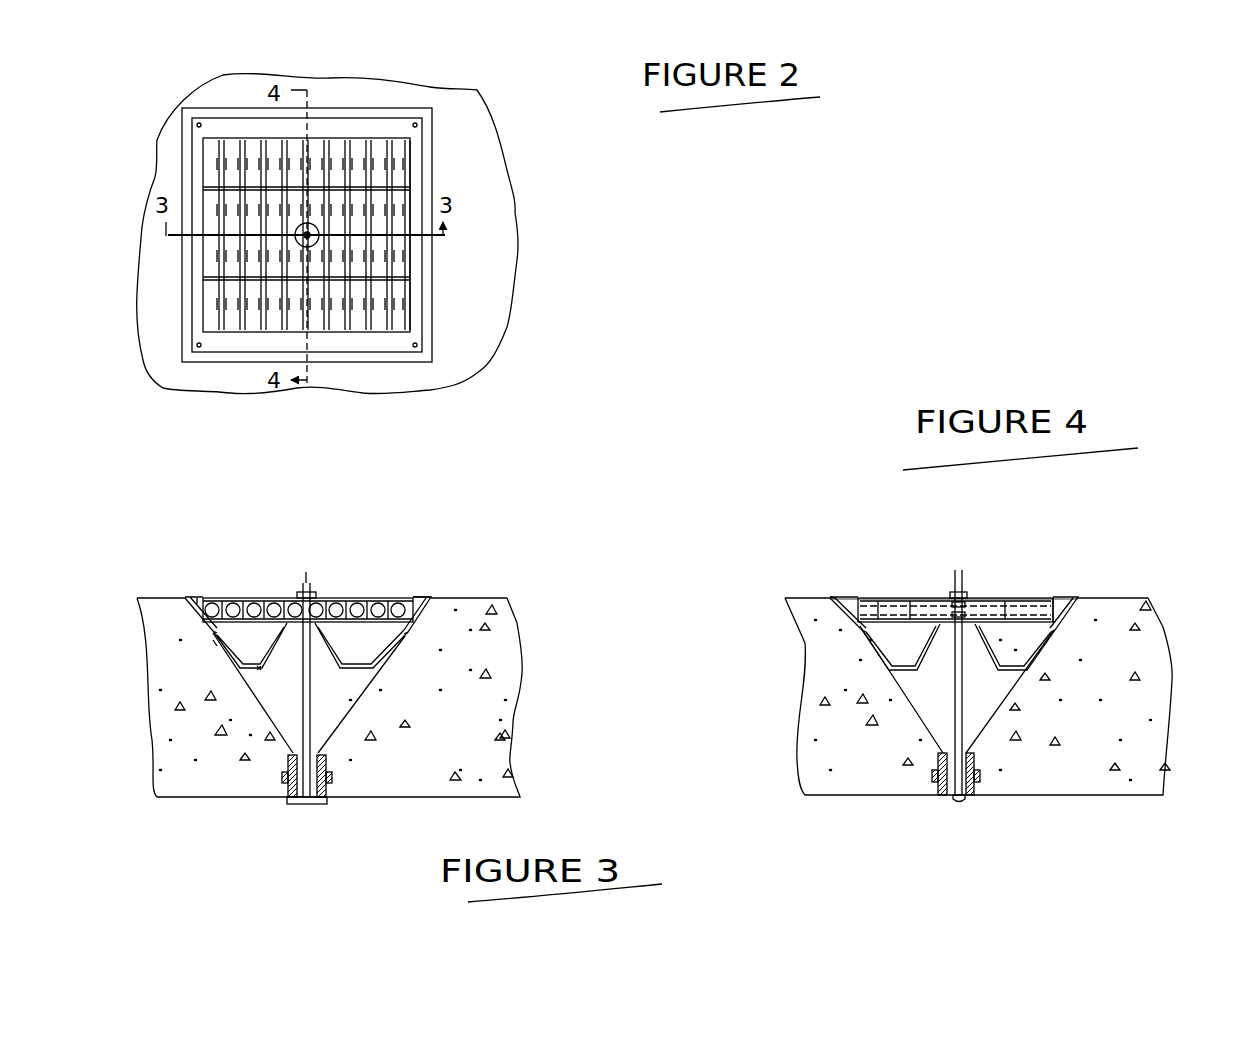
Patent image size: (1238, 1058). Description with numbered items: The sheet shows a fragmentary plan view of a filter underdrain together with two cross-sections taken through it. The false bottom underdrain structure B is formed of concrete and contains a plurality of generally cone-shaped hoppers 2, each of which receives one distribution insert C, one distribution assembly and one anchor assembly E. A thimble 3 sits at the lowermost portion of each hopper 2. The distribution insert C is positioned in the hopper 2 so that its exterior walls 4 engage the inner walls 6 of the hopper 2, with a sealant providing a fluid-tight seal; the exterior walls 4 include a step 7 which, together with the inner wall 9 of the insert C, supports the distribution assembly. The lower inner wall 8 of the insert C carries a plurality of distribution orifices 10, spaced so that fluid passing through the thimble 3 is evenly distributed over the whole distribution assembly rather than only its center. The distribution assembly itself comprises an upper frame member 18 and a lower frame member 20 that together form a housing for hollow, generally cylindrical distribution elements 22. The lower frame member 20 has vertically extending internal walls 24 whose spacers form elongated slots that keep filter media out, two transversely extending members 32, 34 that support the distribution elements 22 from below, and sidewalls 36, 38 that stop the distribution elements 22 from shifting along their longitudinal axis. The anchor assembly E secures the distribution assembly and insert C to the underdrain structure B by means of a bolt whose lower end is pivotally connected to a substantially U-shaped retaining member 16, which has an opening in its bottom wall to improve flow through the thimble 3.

In FIG. 4, the hopper 2 is at (916, 712).
In FIG. 3, the thimble 3 is at (288, 790).
In FIG. 4, the thimble 3 is at (933, 777).
In FIG. 3, the exterior wall 4 is at (261, 668).
In FIG. 3, the inner wall 6 is at (213, 644).
In FIG. 3, the step 7 is at (208, 627).
In FIG. 4, the step 7 is at (856, 630).
In FIG. 3, the lower inner wall 8 is at (267, 668).
In FIG. 3, the inner wall 9 is at (317, 645).
In FIG. 3, the distribution orifice 10 is at (230, 647).
In FIG. 3, the retaining member 16 is at (327, 804).
In FIG. 4, the retaining member 16 is at (960, 804).
In FIG. 3, the upper frame member 18 is at (395, 597).
In FIG. 4, the upper frame member 18 is at (861, 598).
In FIG. 3, the lower frame member 20 is at (416, 622).
In FIG. 2, the distribution element 22 is at (382, 218).
In FIG. 3, the distribution element 22 is at (333, 606).
In FIG. 4, the distribution element 22 is at (1036, 601).
In FIG. 2, the internal wall 24 is at (396, 298).
In FIG. 2, the transversely extending member 32 is at (380, 180).
In FIG. 2, the transversely extending member 34 is at (402, 278).
In FIG. 4, the sidewall 36 is at (850, 610).
In FIG. 4, the sidewall 38 is at (1055, 610).
In FIG. 4, the false bottom underdrain structure B is at (1140, 650).
In FIG. 2, the distribution insert C is at (432, 156).
In FIG. 3, the distribution insert C is at (316, 630).
In FIG. 3, the anchor assembly E is at (307, 589).
In FIG. 4, the anchor assembly E is at (969, 556).